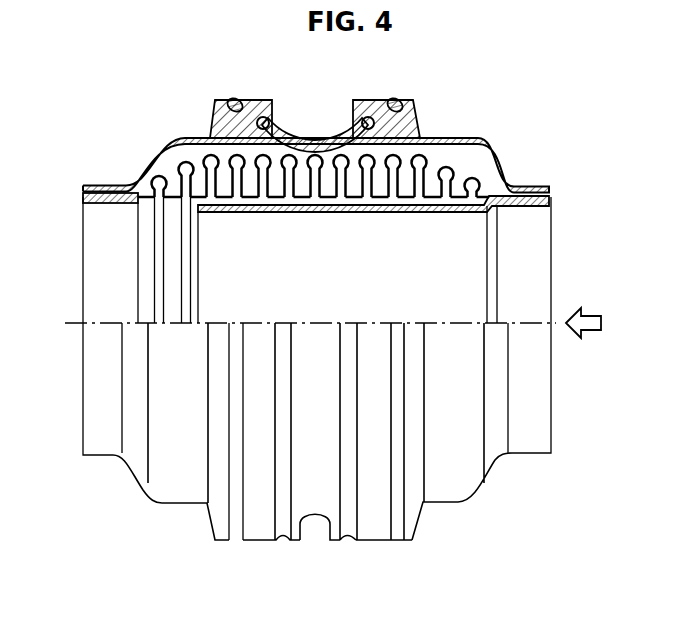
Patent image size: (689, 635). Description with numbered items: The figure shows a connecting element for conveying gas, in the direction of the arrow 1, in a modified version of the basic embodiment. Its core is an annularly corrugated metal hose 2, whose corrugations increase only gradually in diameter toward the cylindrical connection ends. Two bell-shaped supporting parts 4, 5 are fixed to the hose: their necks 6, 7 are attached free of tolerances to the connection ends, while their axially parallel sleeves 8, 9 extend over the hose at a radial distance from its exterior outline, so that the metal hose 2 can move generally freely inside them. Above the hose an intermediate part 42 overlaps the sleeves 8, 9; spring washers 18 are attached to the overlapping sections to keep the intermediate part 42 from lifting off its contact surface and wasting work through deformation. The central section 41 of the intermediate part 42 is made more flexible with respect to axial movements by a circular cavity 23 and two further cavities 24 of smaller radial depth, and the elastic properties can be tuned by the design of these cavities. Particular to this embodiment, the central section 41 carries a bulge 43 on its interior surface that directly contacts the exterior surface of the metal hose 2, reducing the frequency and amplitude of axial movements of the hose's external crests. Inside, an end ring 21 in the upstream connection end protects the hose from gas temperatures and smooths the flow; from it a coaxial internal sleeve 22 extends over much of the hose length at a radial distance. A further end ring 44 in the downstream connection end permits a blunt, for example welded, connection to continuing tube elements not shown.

The arrow 1 is at (592, 318).
The annularly corrugated metal hose 2 is at (478, 167).
The supporting part 4 is at (134, 164).
The supporting part 5 is at (500, 162).
The neck 6 is at (90, 187).
The neck 7 is at (527, 432).
The sleeve 8 is at (183, 483).
The sleeve 9 is at (450, 481).
The spring washers 18 is at (398, 536).
The end ring 21 is at (520, 258).
The internal sleeve 22 is at (478, 225).
The circular cavity 23 is at (317, 516).
The cavities 24 is at (283, 538).
The central section 41 is at (378, 528).
The intermediate part 42 is at (407, 106).
The bulge 43 is at (287, 124).
The end ring 44 is at (113, 230).